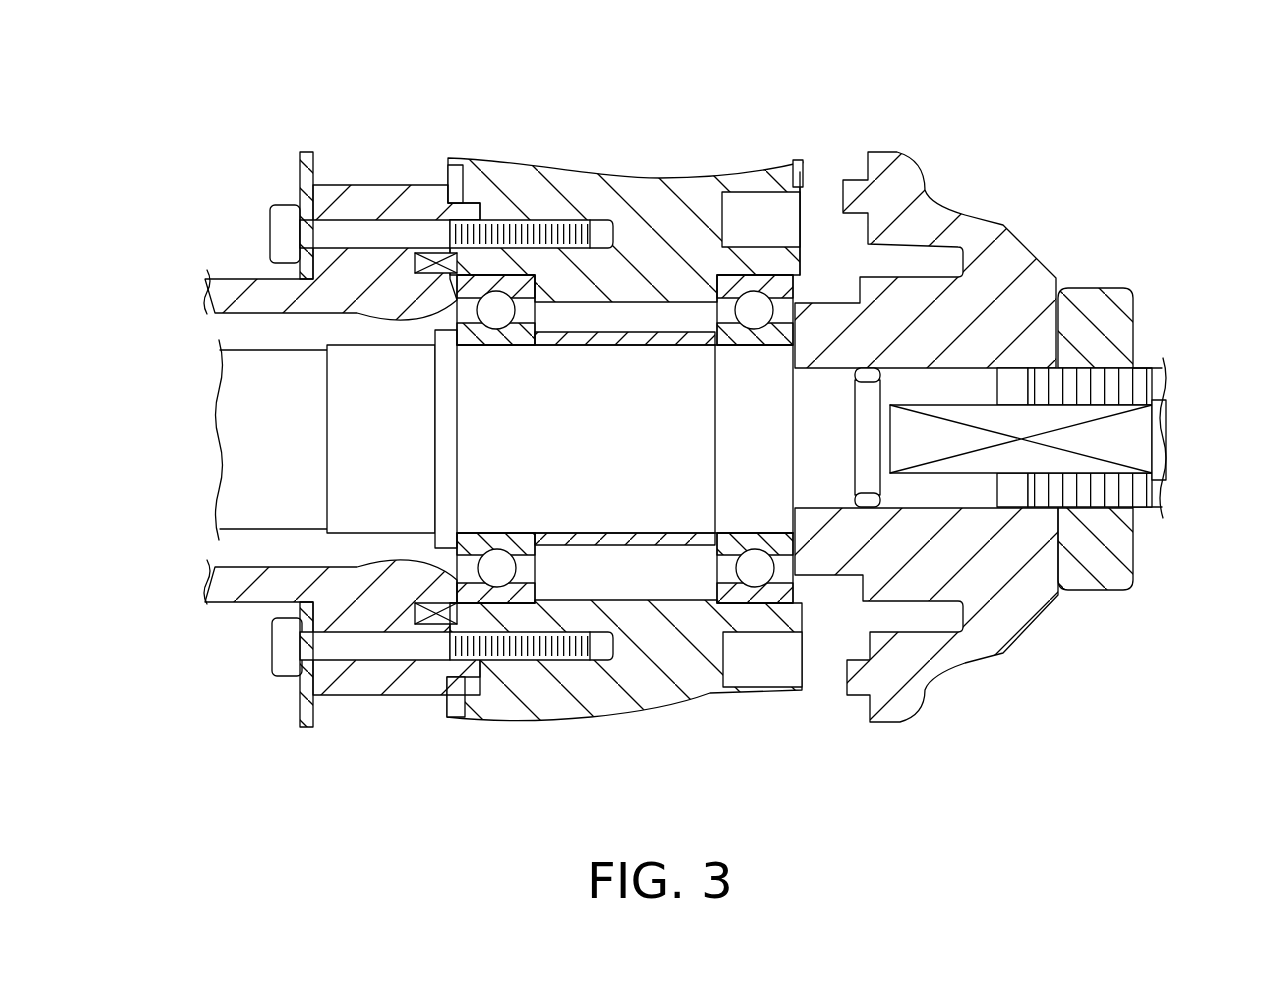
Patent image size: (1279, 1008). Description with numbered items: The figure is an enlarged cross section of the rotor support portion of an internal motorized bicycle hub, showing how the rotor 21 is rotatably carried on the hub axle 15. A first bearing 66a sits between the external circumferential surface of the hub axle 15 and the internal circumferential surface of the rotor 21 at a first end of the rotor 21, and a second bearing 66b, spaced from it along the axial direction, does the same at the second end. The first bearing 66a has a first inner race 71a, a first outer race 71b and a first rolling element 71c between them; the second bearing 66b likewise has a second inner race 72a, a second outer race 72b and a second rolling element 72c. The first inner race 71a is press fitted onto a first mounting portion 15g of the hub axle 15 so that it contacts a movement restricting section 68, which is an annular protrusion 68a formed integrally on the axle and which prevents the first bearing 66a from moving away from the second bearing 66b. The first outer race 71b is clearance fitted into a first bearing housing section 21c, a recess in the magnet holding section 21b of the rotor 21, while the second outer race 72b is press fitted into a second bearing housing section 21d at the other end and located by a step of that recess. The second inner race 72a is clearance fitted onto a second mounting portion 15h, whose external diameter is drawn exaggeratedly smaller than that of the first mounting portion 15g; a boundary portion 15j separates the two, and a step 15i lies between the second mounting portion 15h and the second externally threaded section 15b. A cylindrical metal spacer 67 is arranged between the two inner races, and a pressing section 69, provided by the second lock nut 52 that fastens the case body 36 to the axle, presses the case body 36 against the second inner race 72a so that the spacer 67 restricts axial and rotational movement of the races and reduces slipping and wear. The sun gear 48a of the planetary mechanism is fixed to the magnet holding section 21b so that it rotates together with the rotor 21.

The hub axle 15 is at (255, 345).
The second externally threaded section 15b is at (1107, 382).
The first mounting portion 15g is at (572, 465).
The second mounting portion 15h is at (985, 565).
The step 15i is at (862, 540).
The boundary portion 15j is at (713, 453).
The rotor 21 is at (652, 165).
The magnet holding section 21b is at (660, 184).
The first bearing housing section 21c is at (312, 153).
The second bearing housing section 21d is at (800, 303).
The case body 36 is at (1000, 203).
The sun gear 48a is at (240, 290).
The second lock nut 52 is at (1107, 312).
The first bearing 66a is at (485, 270).
The second bearing 66b is at (790, 277).
The spacer 67 is at (608, 328).
The movement restricting section 68 is at (423, 463).
The annular protrusion 68a is at (385, 555).
The pressing section 69 is at (1088, 272).
The first inner race 71a is at (560, 600).
The first outer race 71b is at (500, 600).
The first rolling element 71c is at (493, 572).
The second inner race 72a is at (733, 540).
The second outer race 72b is at (755, 580).
The second rolling element 72c is at (762, 453).